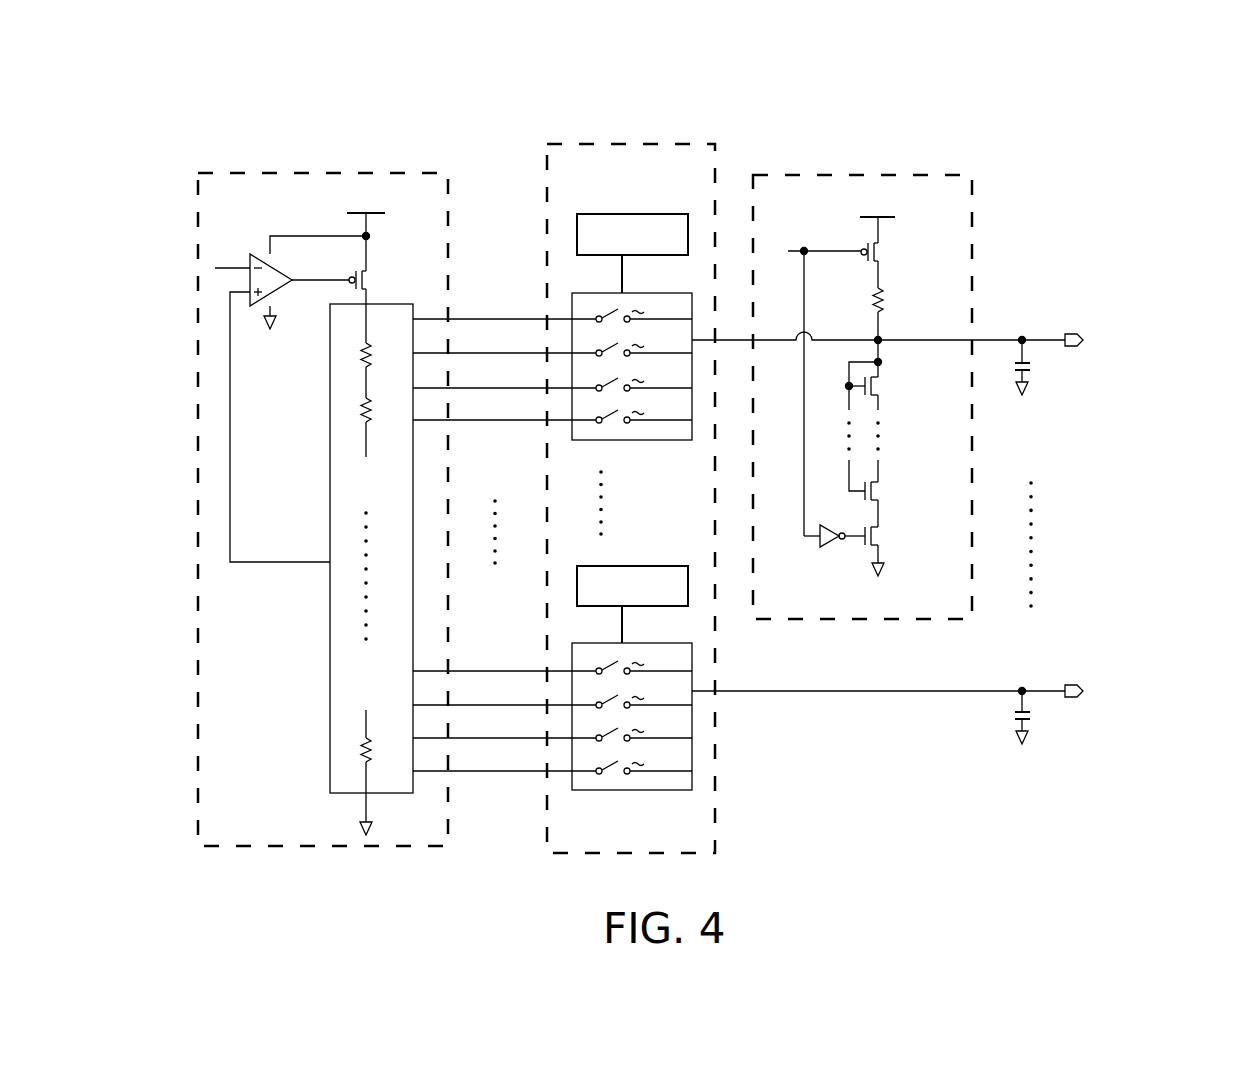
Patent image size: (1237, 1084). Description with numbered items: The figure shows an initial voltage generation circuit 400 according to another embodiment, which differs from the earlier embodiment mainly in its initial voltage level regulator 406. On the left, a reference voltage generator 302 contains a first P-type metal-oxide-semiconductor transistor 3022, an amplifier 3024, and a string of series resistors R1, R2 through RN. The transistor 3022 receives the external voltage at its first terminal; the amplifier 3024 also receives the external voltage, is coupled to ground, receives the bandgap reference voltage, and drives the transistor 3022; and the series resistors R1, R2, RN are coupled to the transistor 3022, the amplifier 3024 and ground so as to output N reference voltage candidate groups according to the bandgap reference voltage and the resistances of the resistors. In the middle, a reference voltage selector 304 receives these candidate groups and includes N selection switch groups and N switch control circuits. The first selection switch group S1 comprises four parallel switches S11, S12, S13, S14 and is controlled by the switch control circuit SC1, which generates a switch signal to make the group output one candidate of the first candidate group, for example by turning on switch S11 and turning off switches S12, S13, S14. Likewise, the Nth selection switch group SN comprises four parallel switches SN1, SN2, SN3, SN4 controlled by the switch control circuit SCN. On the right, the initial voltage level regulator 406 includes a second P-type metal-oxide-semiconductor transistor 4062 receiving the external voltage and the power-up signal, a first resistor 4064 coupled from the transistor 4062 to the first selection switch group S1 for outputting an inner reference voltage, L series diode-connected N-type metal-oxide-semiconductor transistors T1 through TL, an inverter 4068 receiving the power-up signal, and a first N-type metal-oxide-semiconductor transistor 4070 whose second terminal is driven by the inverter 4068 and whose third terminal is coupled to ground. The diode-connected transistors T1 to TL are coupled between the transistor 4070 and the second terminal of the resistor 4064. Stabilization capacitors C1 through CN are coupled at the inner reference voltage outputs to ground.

The initial voltage generation circuit 400 is at (1098, 133).
The reference voltage generator 302 is at (302, 172).
The first P-type metal-oxide-semiconductor transistor 3022 is at (364, 281).
The amplifier 3024 is at (277, 268).
The reference voltage selector 304 is at (630, 143).
The initial voltage level regulator 406 is at (860, 175).
The second P-type metal-oxide-semiconductor transistor 4062 is at (869, 253).
The first resistor 4064 is at (913, 303).
The inverter 4068 is at (819, 541).
The first N-type metal-oxide-semiconductor transistor 4070 is at (899, 537).
The series resistor R1 is at (382, 355).
The series resistor R2 is at (382, 411).
The series resistor RN is at (383, 751).
The switch control circuit SC1 is at (649, 213).
The switch control circuit SCN is at (651, 565).
The first selection switch group S1 is at (632, 397).
The Nth selection switch group SN is at (632, 745).
The switch S11 is at (644, 310).
The switch S12 is at (644, 344).
The switch S13 is at (644, 379).
The switch S14 is at (644, 411).
The switch SN1 is at (644, 662).
The switch SN2 is at (644, 696).
The switch SN3 is at (644, 729).
The switch SN4 is at (644, 762).
The diode-connected N-type metal-oxide-semiconductor transistor T1 is at (895, 389).
The diode-connected N-type metal-oxide-semiconductor transistor TL is at (895, 491).
The stabilization capacitor C1 is at (1039, 366).
The stabilization capacitor CN is at (1040, 716).